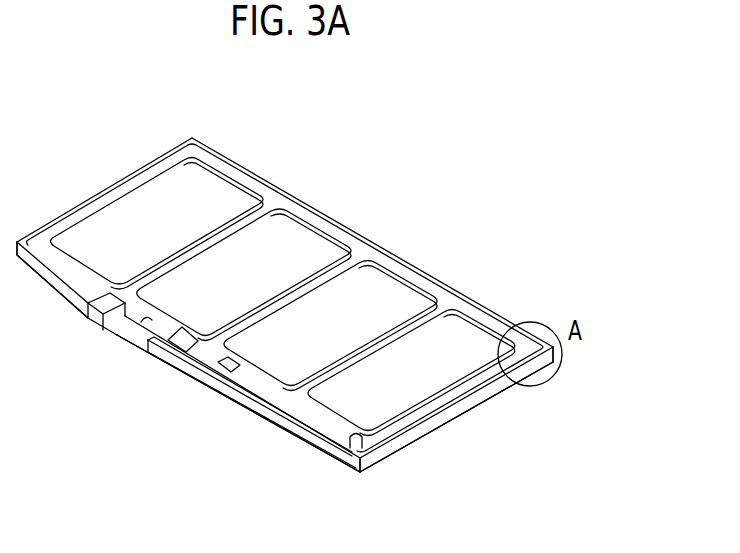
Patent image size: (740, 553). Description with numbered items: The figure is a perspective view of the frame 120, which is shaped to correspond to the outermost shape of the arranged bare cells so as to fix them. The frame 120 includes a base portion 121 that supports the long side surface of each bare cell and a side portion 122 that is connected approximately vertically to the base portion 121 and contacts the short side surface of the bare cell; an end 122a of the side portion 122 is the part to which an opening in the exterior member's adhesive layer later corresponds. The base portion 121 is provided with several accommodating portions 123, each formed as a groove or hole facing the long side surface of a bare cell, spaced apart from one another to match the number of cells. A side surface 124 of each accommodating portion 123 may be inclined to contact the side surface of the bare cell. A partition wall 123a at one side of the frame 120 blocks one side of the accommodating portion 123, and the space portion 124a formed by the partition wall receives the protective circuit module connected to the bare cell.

The frame 120 is at (380, 198).
The base portion 121 is at (147, 318).
The side portion 122 is at (462, 407).
The end of the side portion 122a is at (400, 248).
The accommodating portion 123 is at (268, 263).
The partition wall 123a is at (171, 257).
The side surface of the accommodating portion 124 is at (237, 367).
The space portion 124a is at (258, 393).